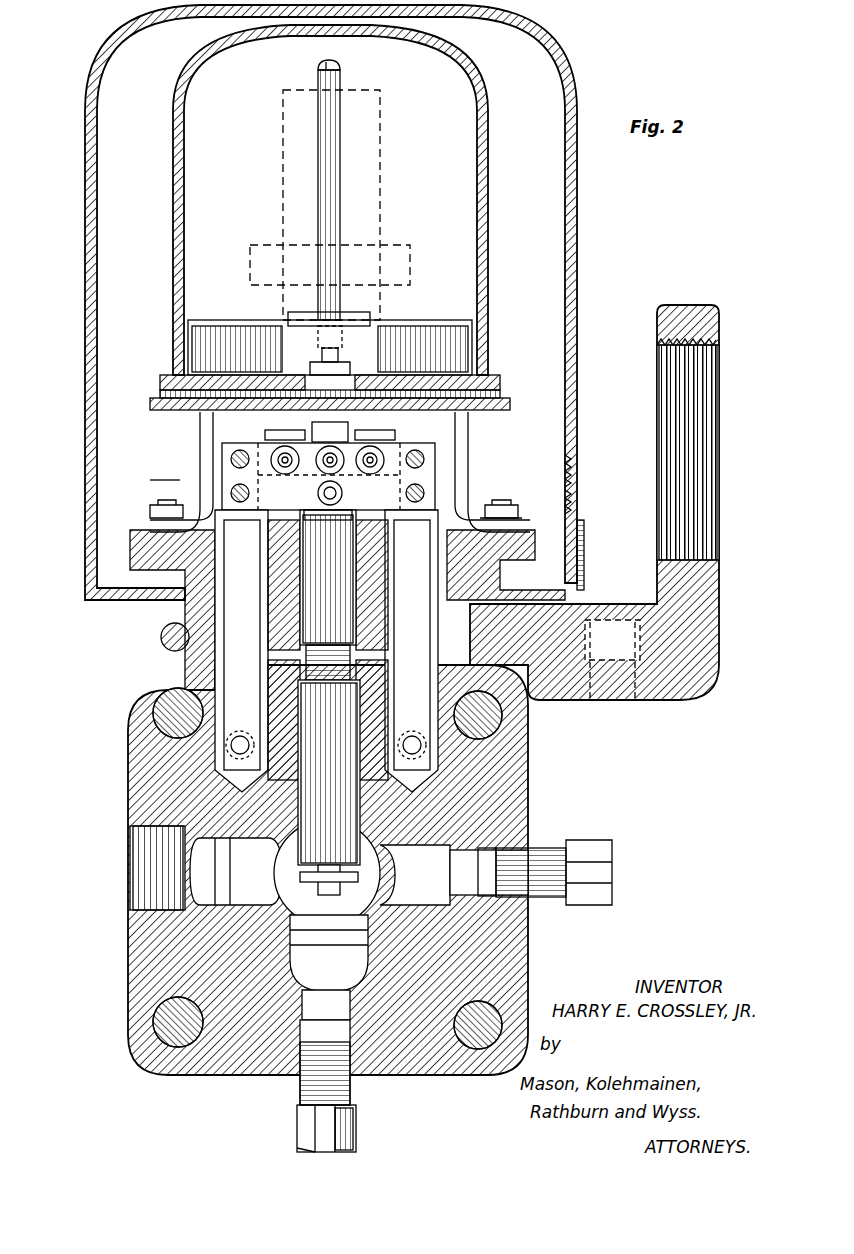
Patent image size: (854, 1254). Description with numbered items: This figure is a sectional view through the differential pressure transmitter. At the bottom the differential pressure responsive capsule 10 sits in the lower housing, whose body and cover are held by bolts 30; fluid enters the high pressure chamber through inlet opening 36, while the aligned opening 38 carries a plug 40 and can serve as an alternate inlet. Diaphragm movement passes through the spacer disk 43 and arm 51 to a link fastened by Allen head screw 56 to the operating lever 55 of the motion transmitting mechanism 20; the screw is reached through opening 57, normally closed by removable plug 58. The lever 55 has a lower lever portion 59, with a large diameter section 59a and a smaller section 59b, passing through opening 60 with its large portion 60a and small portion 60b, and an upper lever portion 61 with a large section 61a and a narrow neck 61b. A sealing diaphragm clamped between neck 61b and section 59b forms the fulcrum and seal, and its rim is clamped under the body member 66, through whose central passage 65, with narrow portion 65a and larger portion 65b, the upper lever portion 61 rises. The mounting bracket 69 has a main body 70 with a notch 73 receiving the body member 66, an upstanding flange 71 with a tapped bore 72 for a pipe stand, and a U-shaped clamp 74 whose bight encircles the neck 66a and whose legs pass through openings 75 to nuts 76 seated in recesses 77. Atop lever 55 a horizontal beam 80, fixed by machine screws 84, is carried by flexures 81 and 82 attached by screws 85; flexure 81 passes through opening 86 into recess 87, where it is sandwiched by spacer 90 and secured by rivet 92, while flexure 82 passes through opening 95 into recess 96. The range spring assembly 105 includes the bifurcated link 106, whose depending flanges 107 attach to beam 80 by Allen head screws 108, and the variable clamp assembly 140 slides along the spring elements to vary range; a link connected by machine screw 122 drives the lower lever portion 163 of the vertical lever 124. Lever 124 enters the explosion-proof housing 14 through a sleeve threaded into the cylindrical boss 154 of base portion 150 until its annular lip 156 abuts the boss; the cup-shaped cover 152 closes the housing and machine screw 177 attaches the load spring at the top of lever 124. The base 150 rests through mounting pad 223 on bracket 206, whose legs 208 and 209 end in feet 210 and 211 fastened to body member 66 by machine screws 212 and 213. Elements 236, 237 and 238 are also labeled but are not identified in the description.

The differential pressure responsive capsule 10 is at (320, 920).
The explosion-proof housing 14 is at (478, 95).
The motion transmitting mechanism 20 is at (462, 468).
The bolts 30 is at (160, 705).
The inlet opening 36 is at (130, 905).
The opening 38 is at (488, 848).
The plugs 40 is at (595, 838).
The spacer disk 43 is at (372, 872).
The arm 51 is at (340, 885).
The operating lever 55 is at (295, 860).
The Allen head screw 56 is at (325, 885).
The opening 57 is at (352, 1030).
The removable plug 58 is at (356, 1125).
The lower lever portion 59 is at (360, 805).
The relatively large diameter section 59a is at (290, 800).
The smaller diameter section 59b is at (385, 695).
The opening 60 is at (390, 690).
The relatively large diameter portion 60a is at (300, 700).
The relatively small diameter portion 60b is at (300, 668).
The upper lever portion 61 is at (328, 595).
The relatively large diameter section 61a is at (306, 612).
The neck 61b is at (350, 650).
The central passage 65 is at (388, 566).
The narrow portion 65a is at (388, 585).
The larger diameter portion 65b is at (308, 630).
The body member 66 is at (485, 578).
The neck 66a is at (185, 655).
The mounting bracket 69 is at (690, 300).
The main body 70 is at (580, 606).
The upstanding right angle flange 71 is at (721, 320).
The tapped bore 72 is at (719, 560).
The notch 73 is at (470, 636).
The U-shaped clamp 74 is at (168, 640).
The openings 75 is at (565, 650).
The nuts 76 is at (590, 682).
The recesses 77 is at (640, 730).
The horizontal beam 80 is at (437, 477).
The flexure mounting strip 81 is at (411, 651).
The flexure mounting strip 82 is at (241, 651).
The machine screws 84 is at (328, 522).
The screws 85 is at (231, 493).
The opening 86 is at (450, 568).
The recess 87 is at (440, 757).
The spacer 90 is at (412, 735).
The rivet 92 is at (420, 760).
The opening 95 is at (215, 575).
The recess 96 is at (215, 680).
The range spring assembly 105 is at (385, 110).
The bifurcated link 106 is at (340, 440).
The depending flanges 107 is at (287, 446).
The Allen head screws 108 is at (300, 470).
The machine screw 122 is at (342, 370).
The vertical lever 124 is at (340, 200).
The variable clamp assembly 140 is at (400, 258).
The base portion 150 is at (432, 372).
The cup-shaped cover 152 is at (488, 155).
The cylindrical boss 154 is at (290, 338).
The annular lip 156 is at (370, 318).
The lower lever portion 163 is at (315, 380).
The machine screw 177 is at (332, 68).
The bracket 206 is at (510, 404).
The leg 208 is at (470, 440).
The leg 209 is at (200, 448).
The foot 210 is at (518, 520).
The foot 211 is at (150, 512).
The machine screw 212 is at (495, 505).
The machine screw 213 is at (225, 480).
The mounting pad 223 is at (500, 385).
The shell lower rim 236 is at (584, 540).
The shell thread 237 is at (568, 510).
The shell thread 238 is at (568, 470).